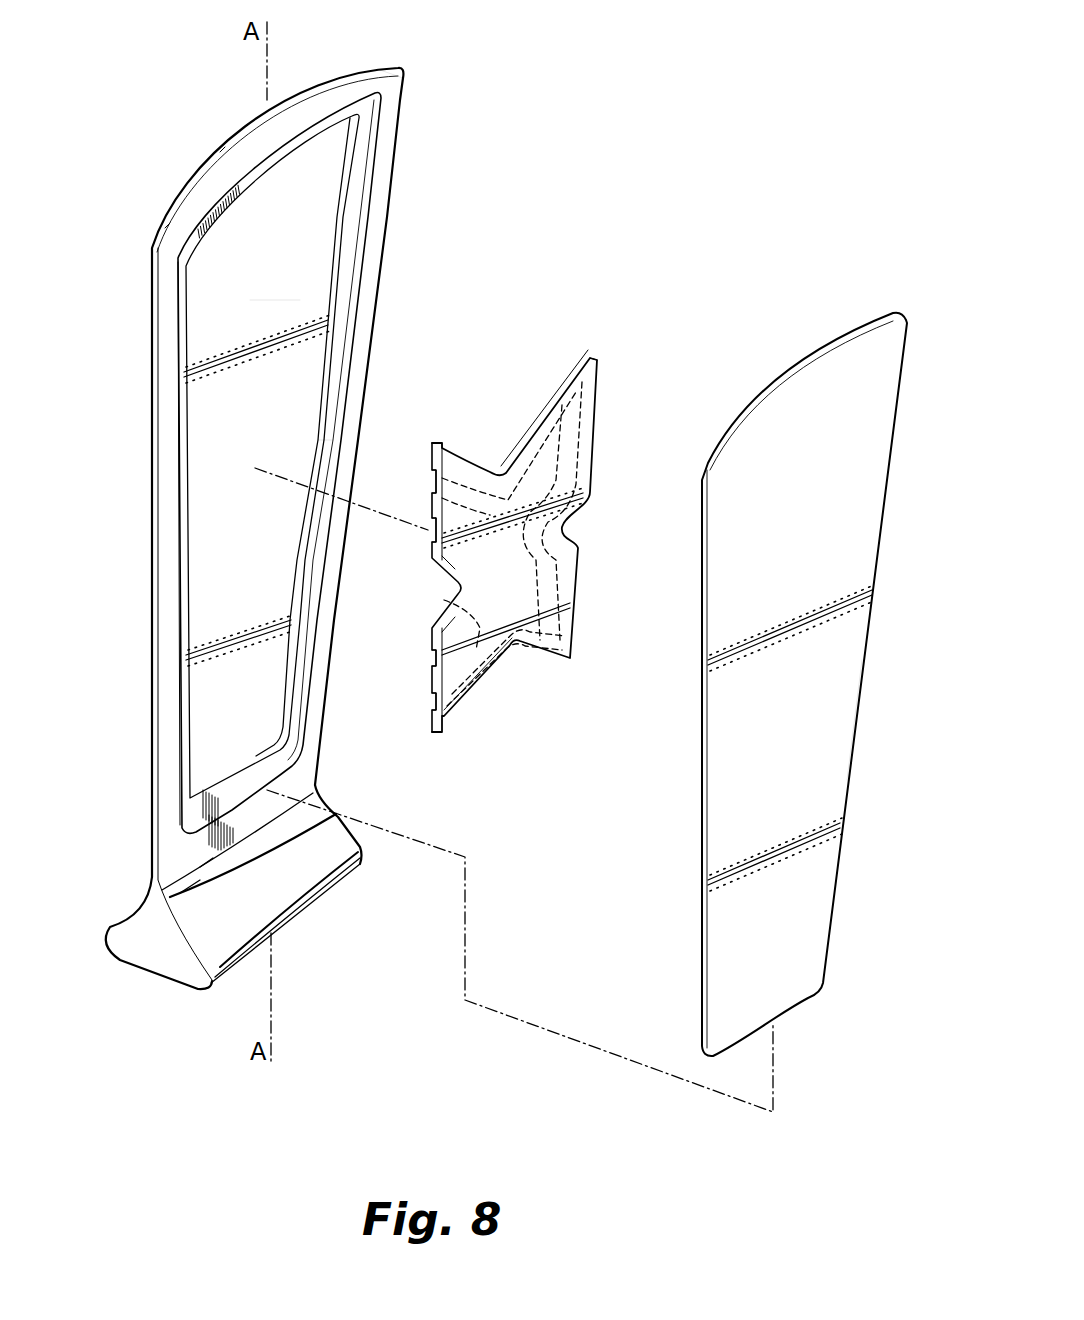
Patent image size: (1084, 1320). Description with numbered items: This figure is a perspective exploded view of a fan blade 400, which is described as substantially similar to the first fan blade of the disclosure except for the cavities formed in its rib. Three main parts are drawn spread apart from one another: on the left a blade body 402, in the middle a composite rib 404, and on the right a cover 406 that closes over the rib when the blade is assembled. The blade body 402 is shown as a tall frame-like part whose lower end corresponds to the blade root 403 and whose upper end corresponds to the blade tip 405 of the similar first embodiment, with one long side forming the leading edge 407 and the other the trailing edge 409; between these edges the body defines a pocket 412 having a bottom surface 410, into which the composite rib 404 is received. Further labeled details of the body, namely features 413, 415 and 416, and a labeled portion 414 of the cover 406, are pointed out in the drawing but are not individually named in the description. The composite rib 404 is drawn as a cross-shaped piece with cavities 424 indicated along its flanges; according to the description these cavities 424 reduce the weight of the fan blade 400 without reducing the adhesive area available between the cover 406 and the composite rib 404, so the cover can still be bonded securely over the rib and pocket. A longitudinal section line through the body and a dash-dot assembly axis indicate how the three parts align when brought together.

The fan blade 400 is at (631, 124).
The blade body 402 is at (139, 292).
The base plate 403 is at (303, 895).
The composite rib 404 is at (605, 368).
The top rail 405 is at (190, 193).
The cover 406 is at (723, 416).
The left side rail 407 is at (155, 538).
The right side rail 409 is at (387, 212).
The channel groove 410 is at (313, 273).
The window opening 412 is at (304, 172).
The inner edge 413 is at (188, 520).
The panel edge 414 is at (853, 680).
The inner lip 415 is at (318, 437).
The corner 416 is at (374, 70).
The cavities 424 is at (428, 480).